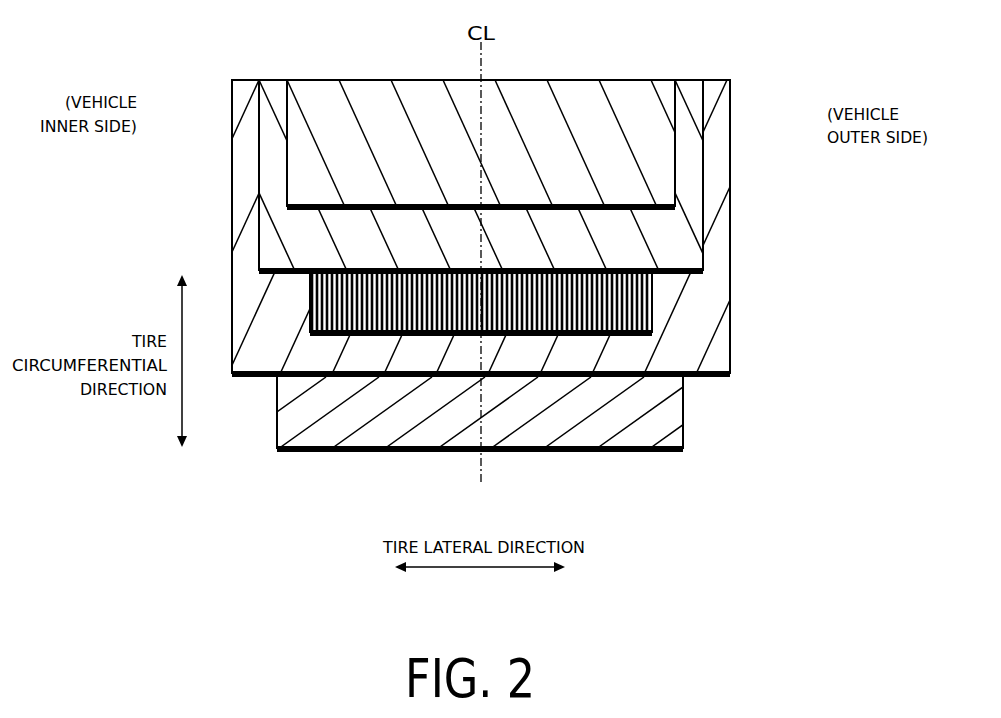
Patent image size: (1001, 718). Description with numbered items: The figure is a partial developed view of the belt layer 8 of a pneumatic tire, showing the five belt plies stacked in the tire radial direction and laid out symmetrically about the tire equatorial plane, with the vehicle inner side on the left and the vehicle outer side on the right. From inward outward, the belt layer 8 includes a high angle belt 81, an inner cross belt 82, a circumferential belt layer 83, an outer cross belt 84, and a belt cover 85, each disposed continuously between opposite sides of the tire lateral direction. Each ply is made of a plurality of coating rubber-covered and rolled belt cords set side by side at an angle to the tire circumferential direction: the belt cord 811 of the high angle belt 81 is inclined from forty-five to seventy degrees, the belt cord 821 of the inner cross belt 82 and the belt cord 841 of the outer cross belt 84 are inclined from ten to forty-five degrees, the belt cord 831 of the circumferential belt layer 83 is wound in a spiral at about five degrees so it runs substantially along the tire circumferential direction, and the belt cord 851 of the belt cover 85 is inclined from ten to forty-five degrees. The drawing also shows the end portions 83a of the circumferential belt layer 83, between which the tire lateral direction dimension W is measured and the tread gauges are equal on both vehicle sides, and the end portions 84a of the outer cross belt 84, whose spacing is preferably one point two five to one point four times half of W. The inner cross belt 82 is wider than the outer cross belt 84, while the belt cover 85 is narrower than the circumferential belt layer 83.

The belt layer 8 is at (724, 55).
The high angle belt 81 is at (673, 415).
The belt cord 811 is at (630, 427).
The inner cross belt 82 is at (720, 349).
The belt cord 821 is at (607, 350).
The circumferential belt layer 83 is at (648, 312).
The end portion 83a is at (309, 302).
The belt cord 831 is at (523, 337).
The outer cross belt 84 is at (693, 217).
The end portion 84a is at (258, 165).
The belt cord 841 is at (590, 230).
The belt cover 85 is at (653, 162).
The belt cord 851 is at (518, 127).